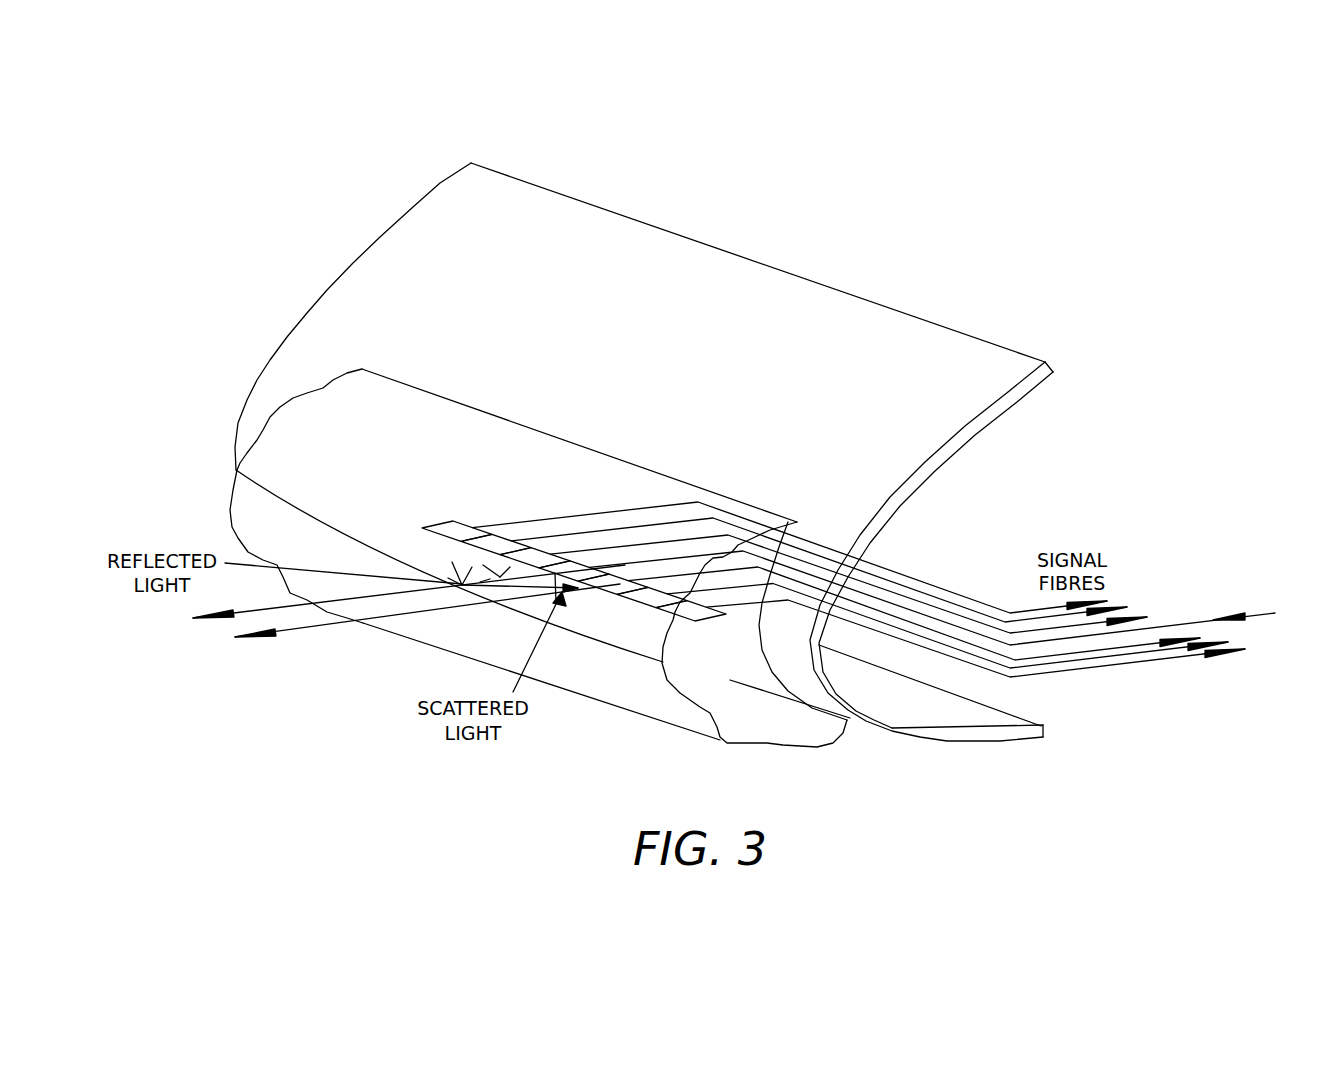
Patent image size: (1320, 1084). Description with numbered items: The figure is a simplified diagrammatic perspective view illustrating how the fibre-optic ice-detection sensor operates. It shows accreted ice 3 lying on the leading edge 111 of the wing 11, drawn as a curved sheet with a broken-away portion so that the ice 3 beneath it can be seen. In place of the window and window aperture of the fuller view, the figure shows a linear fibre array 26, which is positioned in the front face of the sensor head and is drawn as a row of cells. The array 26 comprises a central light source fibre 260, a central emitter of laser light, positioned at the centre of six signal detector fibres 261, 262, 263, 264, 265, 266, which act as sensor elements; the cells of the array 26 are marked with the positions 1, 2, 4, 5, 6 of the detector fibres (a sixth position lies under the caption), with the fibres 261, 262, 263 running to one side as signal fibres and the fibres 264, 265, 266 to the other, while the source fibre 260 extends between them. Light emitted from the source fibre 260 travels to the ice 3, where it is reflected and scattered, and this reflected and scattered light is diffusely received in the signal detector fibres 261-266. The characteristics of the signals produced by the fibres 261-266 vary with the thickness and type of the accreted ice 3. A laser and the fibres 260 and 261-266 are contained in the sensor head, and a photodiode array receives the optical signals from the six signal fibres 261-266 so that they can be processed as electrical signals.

The wing 11 is at (684, 222).
The leading edge 111 is at (256, 368).
The accreted ice 3 is at (773, 747).
The linear fibre array 26 is at (536, 530).
The light source fibre 260 is at (1262, 615).
The signal detector fibre 261 is at (873, 563).
The signal detector fibre 262 is at (908, 585).
The signal detector fibre 263 is at (955, 612).
The signal detector fibre 264 is at (1052, 658).
The signal detector fibre 265 is at (1118, 657).
The signal detector fibre 266 is at (1185, 657).
The fibre array position 1 is at (457, 524).
The fibre array position 2 is at (496, 538).
The fibre array position 4 is at (613, 579).
The fibre array position 5 is at (652, 593).
The fibre array position 6 is at (691, 606).